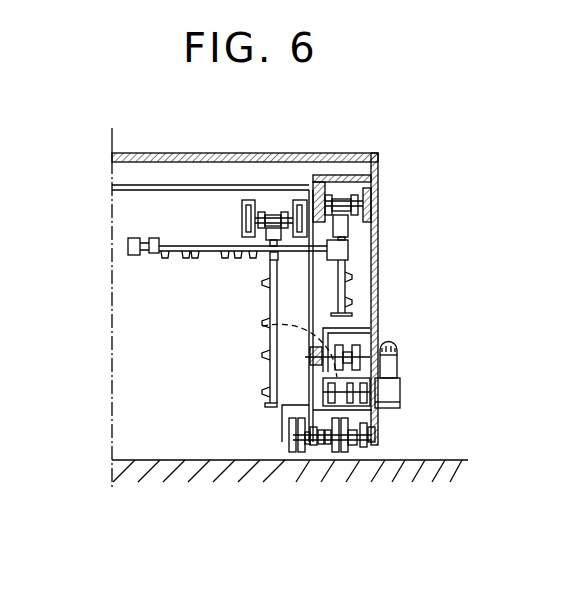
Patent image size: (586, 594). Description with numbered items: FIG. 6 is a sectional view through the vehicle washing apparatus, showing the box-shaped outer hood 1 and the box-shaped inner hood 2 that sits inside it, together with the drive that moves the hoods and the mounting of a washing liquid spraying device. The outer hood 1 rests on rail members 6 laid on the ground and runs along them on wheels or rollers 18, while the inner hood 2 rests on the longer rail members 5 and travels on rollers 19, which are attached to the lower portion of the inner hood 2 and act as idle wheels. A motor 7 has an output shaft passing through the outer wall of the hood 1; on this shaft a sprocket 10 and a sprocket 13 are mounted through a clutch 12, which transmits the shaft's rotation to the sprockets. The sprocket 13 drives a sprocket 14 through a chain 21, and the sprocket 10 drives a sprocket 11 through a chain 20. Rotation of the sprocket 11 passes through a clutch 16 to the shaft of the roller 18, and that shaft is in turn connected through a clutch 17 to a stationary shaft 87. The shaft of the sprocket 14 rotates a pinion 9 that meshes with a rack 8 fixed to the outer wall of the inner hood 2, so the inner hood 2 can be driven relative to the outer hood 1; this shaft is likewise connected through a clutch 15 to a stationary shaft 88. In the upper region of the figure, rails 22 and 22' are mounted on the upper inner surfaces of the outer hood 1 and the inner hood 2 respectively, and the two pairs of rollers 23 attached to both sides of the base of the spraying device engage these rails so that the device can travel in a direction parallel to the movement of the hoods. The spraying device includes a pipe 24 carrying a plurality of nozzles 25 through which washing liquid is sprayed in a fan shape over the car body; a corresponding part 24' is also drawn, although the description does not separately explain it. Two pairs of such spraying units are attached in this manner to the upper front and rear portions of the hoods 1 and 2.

The outer hood 1 is at (284, 153).
The inner hood 2 is at (140, 190).
The rail 22 is at (408, 279).
The rail 22' is at (308, 179).
The rollers 23 is at (372, 202).
The nozzles 25 is at (262, 283).
The pipe 24 is at (273, 294).
The vertical shaft 24' is at (233, 338).
The chain 21 is at (262, 332).
The sprocket 14 is at (357, 333).
The clutch 15 is at (349, 350).
The stationary shaft 88 is at (320, 356).
The sprocket 13 is at (343, 385).
The clutch 12 is at (386, 362).
The motor 7 is at (398, 384).
The sprocket 10 is at (376, 404).
The chain 20 is at (376, 428).
The rack 8 is at (290, 446).
The pinion 9 is at (299, 446).
The rollers 19 is at (307, 441).
The rail members 5 is at (313, 442).
The stationary shaft 87 is at (320, 445).
The clutch 17 is at (328, 446).
The rollers 18 is at (337, 452).
The rail members 6 is at (344, 452).
The clutch 16 is at (353, 448).
The sprocket 11 is at (364, 450).